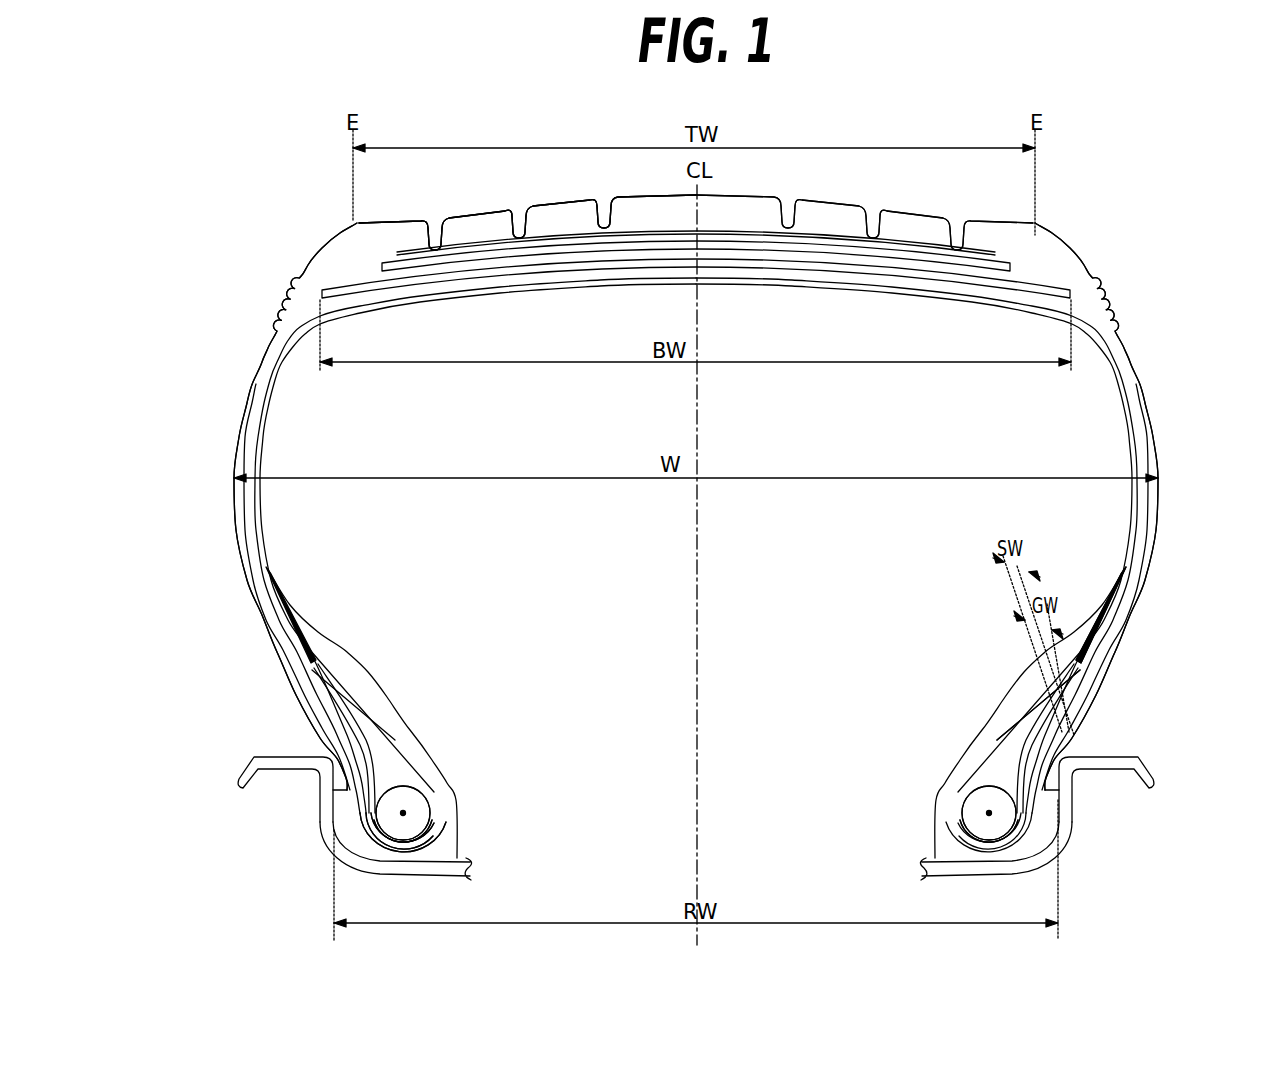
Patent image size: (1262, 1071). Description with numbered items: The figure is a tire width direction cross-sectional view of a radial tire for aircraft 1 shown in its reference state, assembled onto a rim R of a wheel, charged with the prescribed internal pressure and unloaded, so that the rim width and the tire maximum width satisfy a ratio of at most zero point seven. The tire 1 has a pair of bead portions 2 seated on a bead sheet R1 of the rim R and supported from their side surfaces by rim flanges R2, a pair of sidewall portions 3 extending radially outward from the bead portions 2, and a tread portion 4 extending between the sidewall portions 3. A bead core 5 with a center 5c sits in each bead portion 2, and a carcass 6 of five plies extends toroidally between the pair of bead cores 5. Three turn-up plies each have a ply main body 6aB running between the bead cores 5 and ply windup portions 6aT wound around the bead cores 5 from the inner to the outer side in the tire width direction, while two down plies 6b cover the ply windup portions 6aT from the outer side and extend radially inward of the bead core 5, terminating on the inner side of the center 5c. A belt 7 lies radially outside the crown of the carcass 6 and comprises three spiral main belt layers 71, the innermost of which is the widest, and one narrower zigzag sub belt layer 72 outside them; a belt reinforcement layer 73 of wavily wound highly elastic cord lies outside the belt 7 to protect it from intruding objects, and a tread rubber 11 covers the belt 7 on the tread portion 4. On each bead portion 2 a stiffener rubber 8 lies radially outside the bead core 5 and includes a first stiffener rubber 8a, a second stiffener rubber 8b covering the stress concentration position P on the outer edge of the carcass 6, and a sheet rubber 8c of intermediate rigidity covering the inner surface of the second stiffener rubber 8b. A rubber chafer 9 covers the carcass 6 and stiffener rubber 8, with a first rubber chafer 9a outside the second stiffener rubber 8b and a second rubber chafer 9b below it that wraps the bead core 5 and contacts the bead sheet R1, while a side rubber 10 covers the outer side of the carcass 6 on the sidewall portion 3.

The radial tire for aircraft 1 is at (298, 193).
The bead portion 2 is at (293, 750).
The sidewall portion 3 is at (228, 455).
The tread portion 4 is at (555, 190).
The bead core 5 is at (985, 805).
The center of bead core 5c is at (988, 812).
The carcass 6 is at (1131, 402).
The ply main body 6aB is at (1115, 578).
The ply windup portion 6aT is at (1075, 665).
The down ply 6b is at (1125, 595).
The belt 7 is at (676, 249).
The main belt layer 71 is at (342, 283).
The sub belt layer 72 is at (1003, 265).
The belt reinforcement layer 73 is at (920, 243).
The stiffener rubber 8 is at (769, 731).
The first stiffener rubber 8a is at (1003, 767).
The second stiffener rubber 8b is at (1052, 735).
The sheet rubber 8c is at (1070, 718).
The rubber chafer 9 is at (762, 766).
The first rubber chafer 9a is at (1052, 752).
The second rubber chafer 9b is at (1052, 818).
The side rubber 10 is at (1144, 560).
The tread rubber 11 is at (488, 224).
The stress concentration position P is at (1032, 690).
The rim R is at (697, 838).
The bead sheet R1 is at (988, 870).
The rim flange R2 is at (1064, 805).